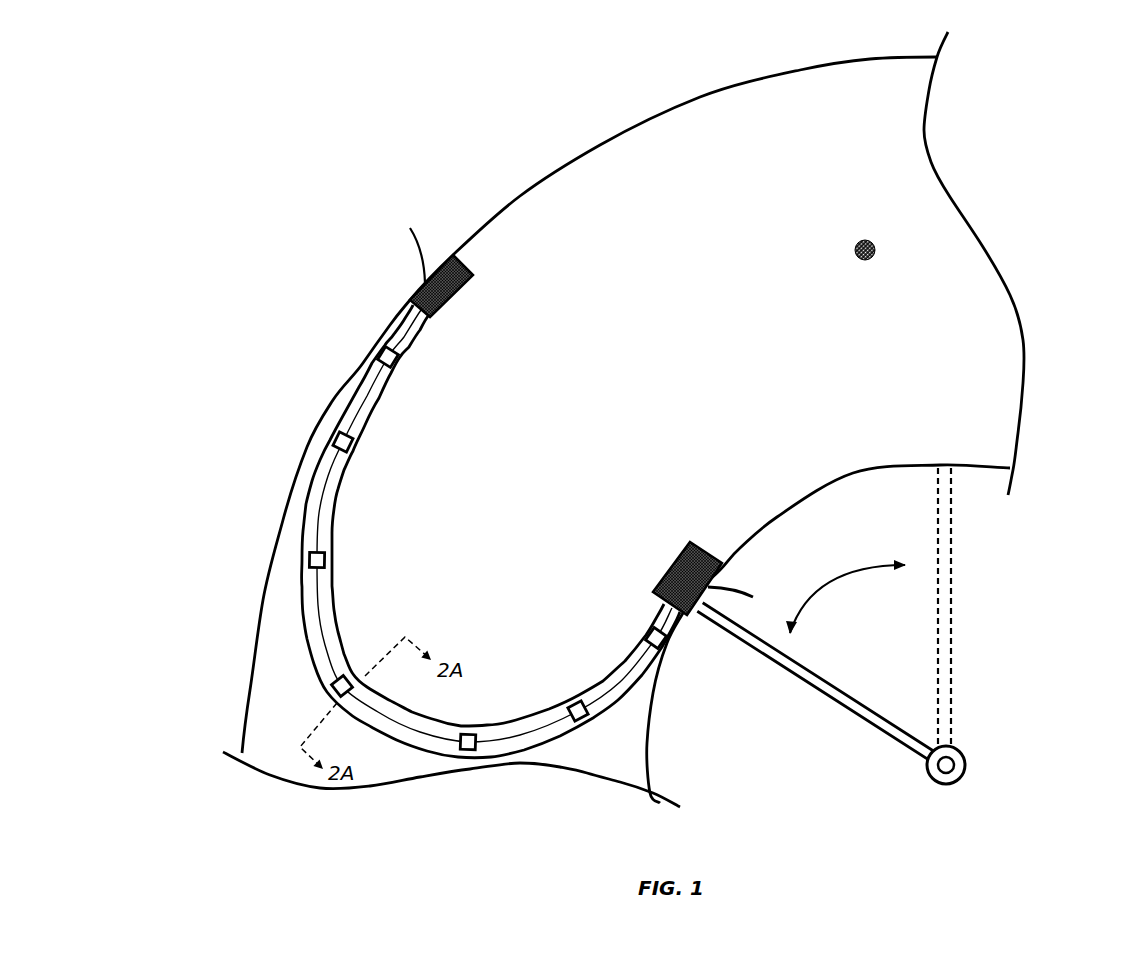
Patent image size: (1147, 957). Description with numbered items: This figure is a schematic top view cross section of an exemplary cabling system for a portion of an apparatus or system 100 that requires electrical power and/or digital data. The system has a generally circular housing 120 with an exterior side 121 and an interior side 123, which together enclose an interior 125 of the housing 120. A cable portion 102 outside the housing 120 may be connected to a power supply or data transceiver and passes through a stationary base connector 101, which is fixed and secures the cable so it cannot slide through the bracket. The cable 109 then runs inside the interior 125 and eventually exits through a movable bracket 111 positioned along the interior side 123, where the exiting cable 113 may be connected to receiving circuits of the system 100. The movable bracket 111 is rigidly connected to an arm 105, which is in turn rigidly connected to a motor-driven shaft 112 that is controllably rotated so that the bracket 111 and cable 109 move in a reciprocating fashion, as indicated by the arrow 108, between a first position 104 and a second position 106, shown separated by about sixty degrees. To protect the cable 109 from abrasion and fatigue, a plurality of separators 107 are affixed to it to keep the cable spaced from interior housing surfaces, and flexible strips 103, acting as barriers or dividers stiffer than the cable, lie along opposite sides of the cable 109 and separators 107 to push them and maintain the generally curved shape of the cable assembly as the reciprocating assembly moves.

The apparatus or system 100 is at (451, 478).
The stationary base connector 101 is at (472, 265).
The cable portion outside the housing 102 is at (417, 258).
The flexible strip 103 is at (345, 478).
The first position 104 is at (820, 693).
The arm 105 is at (1052, 680).
The second position 106 is at (952, 540).
The separators 107 is at (345, 672).
The cable 109 is at (370, 390).
The arrow 108 is at (850, 573).
The movable bracket 111 is at (700, 540).
The motor-driven shaft 112 is at (967, 758).
The cable portion exiting the housing 113 is at (735, 583).
The housing 120 is at (553, 107).
The exterior side 121 is at (808, 68).
The interior side 123 is at (652, 733).
The interior of the housing 125 is at (877, 246).